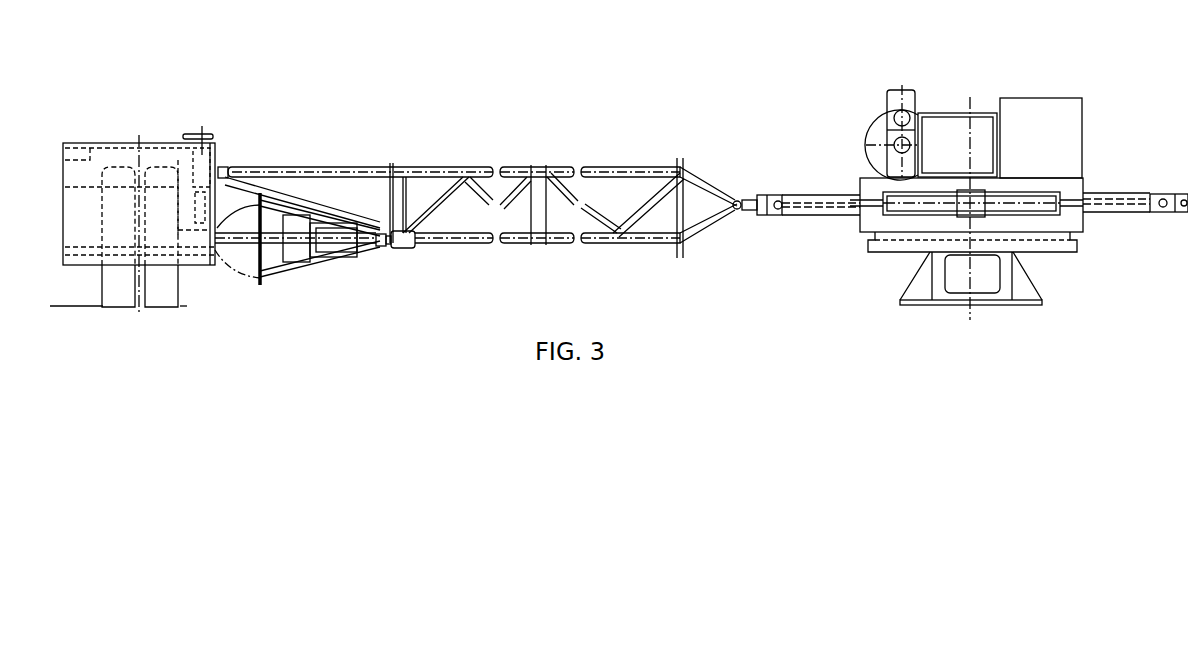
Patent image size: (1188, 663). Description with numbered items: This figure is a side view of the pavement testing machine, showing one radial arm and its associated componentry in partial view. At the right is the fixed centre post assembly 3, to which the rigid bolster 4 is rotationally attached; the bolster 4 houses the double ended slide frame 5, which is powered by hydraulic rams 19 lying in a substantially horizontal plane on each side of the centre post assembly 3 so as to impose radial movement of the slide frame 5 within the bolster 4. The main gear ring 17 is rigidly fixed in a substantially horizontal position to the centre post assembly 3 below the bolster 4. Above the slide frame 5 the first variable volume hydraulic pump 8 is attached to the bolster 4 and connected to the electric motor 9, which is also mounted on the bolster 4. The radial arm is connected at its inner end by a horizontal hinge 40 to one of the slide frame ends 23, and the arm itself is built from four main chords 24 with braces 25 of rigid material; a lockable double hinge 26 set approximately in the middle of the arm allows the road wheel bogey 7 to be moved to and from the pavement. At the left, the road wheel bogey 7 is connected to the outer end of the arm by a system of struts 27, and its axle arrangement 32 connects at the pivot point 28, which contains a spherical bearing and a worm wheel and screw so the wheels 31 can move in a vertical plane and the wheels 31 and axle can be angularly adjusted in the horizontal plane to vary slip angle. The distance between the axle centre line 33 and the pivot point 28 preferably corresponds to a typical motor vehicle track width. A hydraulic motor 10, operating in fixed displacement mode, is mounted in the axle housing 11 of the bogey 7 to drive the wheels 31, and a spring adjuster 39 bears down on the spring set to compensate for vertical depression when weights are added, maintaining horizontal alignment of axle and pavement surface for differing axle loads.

The centre post assembly 3 is at (1020, 287).
The bolster 4 is at (1070, 190).
The slide frame 5 is at (815, 192).
The road wheel bogey 7 is at (183, 140).
The first variable volume hydraulic pump 8 is at (902, 140).
The electric motor 9 is at (880, 128).
The hydraulic motor 10 is at (300, 225).
The axle housing 11 is at (240, 222).
The main gear ring 17 is at (943, 253).
The hydraulic rams 19 is at (1048, 200).
The slide frame ends 23 is at (770, 192).
The main chords 24 is at (434, 165).
The braces 25 is at (640, 205).
The lockable double hinge 26 is at (537, 165).
The struts 27 is at (350, 205).
The pivot point 28 is at (382, 247).
The wheels 31 is at (120, 165).
The axle arrangement 32 is at (220, 250).
The axle centre line 33 is at (139, 310).
The spring adjuster 39 is at (200, 132).
The horizontal hinges 40 is at (736, 199).